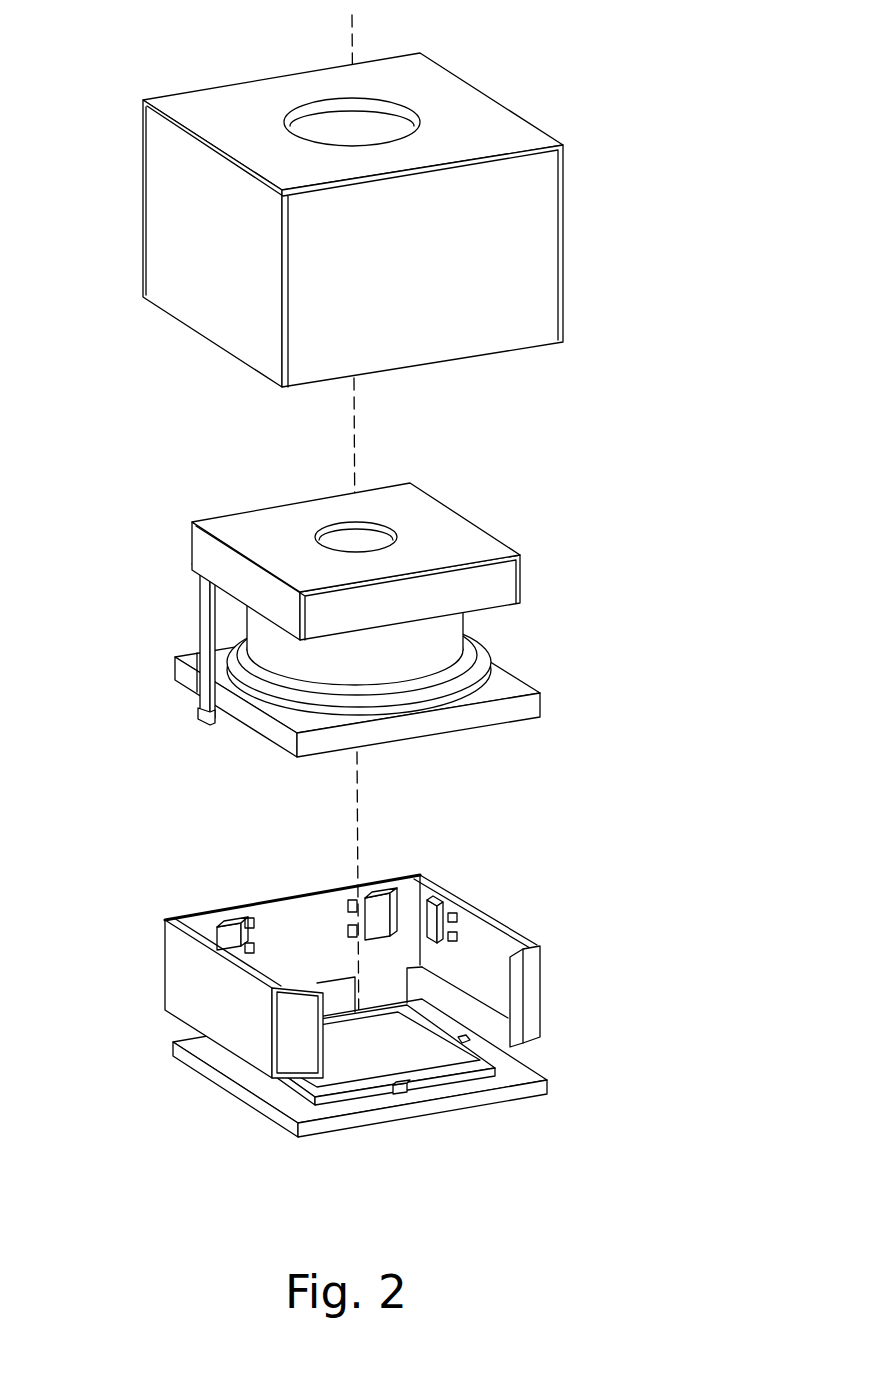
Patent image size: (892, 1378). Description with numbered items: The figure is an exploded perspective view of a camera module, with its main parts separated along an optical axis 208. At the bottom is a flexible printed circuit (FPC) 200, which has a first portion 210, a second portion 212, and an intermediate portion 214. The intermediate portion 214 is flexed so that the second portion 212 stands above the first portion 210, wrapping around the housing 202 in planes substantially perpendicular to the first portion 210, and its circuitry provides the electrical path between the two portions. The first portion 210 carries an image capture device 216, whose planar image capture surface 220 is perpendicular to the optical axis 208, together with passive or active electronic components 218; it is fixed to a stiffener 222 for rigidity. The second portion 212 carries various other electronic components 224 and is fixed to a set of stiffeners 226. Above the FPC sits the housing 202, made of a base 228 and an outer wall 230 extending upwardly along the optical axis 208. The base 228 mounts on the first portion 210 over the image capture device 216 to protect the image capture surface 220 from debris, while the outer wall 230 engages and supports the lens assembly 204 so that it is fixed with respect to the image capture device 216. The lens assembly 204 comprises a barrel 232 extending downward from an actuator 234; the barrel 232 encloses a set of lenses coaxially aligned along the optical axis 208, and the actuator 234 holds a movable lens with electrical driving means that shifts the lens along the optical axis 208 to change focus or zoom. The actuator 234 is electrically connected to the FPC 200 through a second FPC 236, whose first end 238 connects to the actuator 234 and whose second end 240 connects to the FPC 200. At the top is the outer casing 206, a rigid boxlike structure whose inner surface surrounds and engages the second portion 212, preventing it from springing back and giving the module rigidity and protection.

The flexible printed circuit 200 is at (336, 1007).
The housing 202 is at (357, 658).
The lens assembly 204 is at (391, 550).
The outer casing 206 is at (638, 200).
The optical axis 208 is at (353, 23).
The first portion 210 is at (386, 1095).
The second portion 212 is at (366, 951).
The intermediate portion 214 is at (393, 997).
The image capture device 216 is at (468, 1078).
The electronic components 218 is at (408, 1088).
The image capture surface 220 is at (337, 1067).
The stiffener 222 is at (270, 1120).
The electronic components 224 is at (326, 921).
The stiffeners 226 is at (534, 994).
The base 228 is at (373, 735).
The outer wall 230 is at (423, 690).
The barrel 232 is at (427, 629).
The actuator 234 is at (295, 518).
The second FPC 236 is at (168, 624).
The first end 238 is at (203, 563).
The second end 240 is at (202, 705).